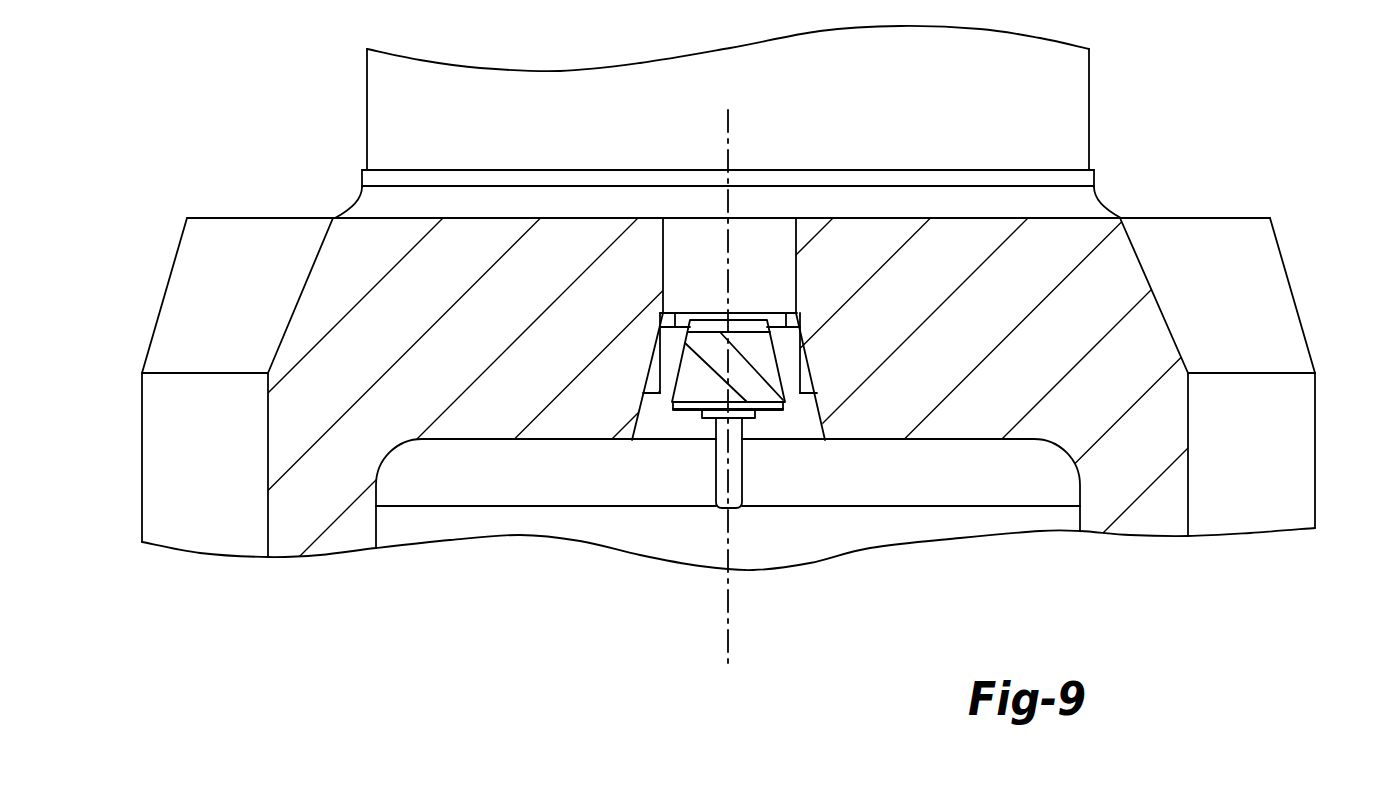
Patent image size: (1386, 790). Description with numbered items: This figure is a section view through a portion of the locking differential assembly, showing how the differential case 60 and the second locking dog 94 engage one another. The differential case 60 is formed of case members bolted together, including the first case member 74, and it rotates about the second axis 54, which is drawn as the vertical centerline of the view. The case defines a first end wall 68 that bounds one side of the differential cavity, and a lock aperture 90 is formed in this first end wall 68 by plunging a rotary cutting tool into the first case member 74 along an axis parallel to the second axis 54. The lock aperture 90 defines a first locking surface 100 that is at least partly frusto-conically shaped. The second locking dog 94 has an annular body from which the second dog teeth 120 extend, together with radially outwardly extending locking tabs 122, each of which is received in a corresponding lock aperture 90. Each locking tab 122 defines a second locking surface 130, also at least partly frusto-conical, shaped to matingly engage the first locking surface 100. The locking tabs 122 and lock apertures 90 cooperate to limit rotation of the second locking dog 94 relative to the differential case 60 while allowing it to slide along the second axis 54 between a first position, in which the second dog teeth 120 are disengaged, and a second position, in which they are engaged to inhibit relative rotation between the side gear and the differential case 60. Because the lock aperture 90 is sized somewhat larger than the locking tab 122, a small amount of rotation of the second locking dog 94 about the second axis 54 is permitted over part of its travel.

The second axis 54 is at (728, 643).
The differential case 60 is at (283, 214).
The first end wall 68 is at (958, 248).
The first case member 74 is at (1233, 275).
The lock aperture 90 is at (753, 252).
The second locking dog 94 is at (762, 425).
The first locking surface 100 is at (818, 411).
The second dog teeth 120 is at (708, 415).
The locking tab 122 is at (707, 382).
The second locking surface 130 is at (780, 367).